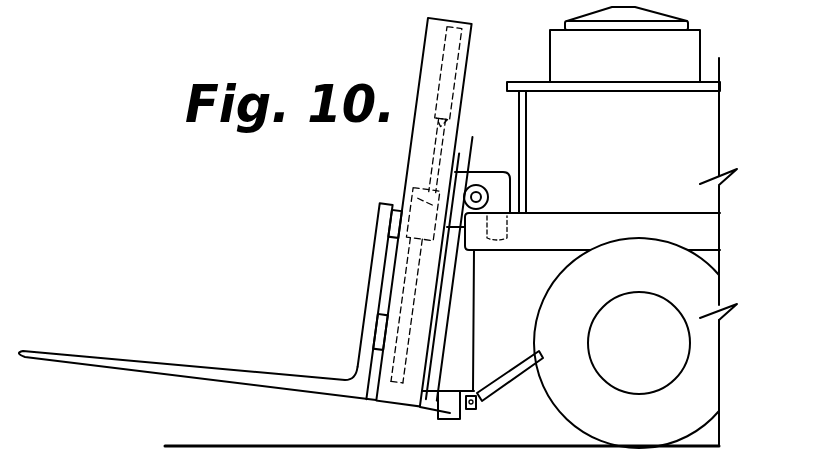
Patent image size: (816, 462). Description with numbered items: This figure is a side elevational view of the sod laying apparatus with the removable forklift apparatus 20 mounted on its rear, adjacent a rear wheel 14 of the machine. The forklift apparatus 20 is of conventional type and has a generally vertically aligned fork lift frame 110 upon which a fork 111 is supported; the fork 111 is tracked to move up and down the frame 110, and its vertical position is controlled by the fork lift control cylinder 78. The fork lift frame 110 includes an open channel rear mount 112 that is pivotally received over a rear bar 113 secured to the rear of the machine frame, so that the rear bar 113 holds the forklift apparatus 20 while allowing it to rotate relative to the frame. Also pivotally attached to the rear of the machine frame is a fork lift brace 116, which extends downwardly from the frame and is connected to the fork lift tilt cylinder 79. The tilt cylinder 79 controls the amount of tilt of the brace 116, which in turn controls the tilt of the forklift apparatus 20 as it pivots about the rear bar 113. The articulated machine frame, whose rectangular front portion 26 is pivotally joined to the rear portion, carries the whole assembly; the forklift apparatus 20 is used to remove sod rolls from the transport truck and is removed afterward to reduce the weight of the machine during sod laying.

The forklift apparatus 20 is at (427, 47).
The fork lift control cylinder 78 is at (456, 47).
The fork lift frame 110 is at (409, 142).
The fork 111 is at (167, 361).
The open channel rear mount 112 is at (473, 127).
The rear bar 113 is at (495, 195).
The rear wheel 14 is at (647, 238).
The front portion 26 is at (548, 240).
The fork lift tilt cylinder 79 is at (510, 368).
The fork lift brace 116 is at (458, 378).